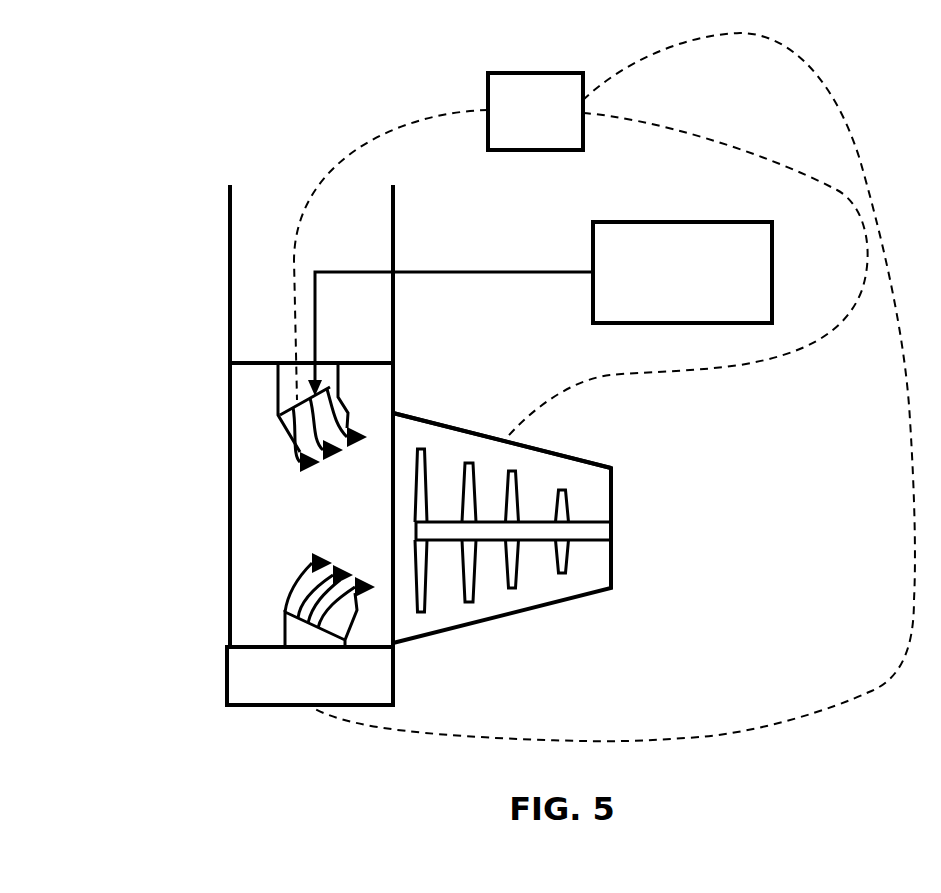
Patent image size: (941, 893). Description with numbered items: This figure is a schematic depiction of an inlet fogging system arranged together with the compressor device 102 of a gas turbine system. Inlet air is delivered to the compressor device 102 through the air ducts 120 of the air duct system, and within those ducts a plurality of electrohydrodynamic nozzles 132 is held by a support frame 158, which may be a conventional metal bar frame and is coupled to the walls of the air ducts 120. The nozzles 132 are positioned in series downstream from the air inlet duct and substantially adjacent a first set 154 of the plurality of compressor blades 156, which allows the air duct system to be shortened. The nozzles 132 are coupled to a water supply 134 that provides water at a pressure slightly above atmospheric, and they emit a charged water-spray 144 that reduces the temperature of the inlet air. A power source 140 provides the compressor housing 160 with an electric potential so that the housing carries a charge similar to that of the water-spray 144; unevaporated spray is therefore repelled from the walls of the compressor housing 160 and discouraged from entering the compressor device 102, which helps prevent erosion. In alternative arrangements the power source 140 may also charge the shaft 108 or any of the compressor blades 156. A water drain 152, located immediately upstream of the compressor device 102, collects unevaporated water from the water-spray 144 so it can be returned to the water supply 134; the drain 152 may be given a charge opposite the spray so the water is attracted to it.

The compressor device 102 is at (565, 521).
The shaft 108 is at (602, 533).
The air ducts 120 is at (230, 215).
The electrohydrodynamic (EHD) nozzles 132 is at (283, 428).
The water supply 134 is at (540, 309).
The power source 140 is at (604, 387).
The water-spray 144 is at (312, 557).
The water drain 152 is at (253, 673).
The first set of compressor blades 154 is at (423, 448).
The compressor blades 156 is at (486, 458).
The support frame 158 is at (255, 362).
The compressor housing 160 is at (572, 458).